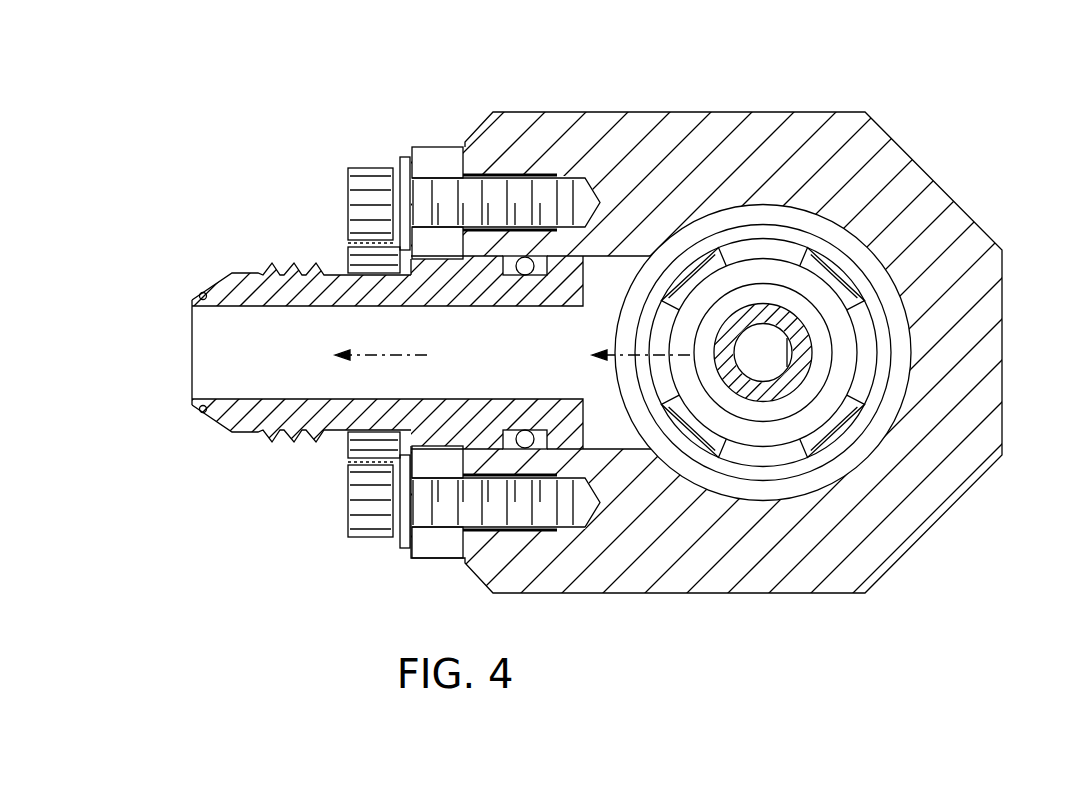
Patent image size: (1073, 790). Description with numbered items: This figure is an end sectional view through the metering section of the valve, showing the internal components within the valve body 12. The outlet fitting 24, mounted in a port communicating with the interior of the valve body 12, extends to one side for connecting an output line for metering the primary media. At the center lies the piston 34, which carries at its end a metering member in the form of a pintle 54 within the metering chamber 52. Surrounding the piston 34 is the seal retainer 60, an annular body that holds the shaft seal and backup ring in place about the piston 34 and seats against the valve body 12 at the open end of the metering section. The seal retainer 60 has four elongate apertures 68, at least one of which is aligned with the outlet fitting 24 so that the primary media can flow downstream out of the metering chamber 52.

The valve body 12 is at (890, 162).
The outlet fitting 24 is at (218, 413).
The piston 34 is at (775, 350).
The metering chamber 52 is at (815, 207).
The pintle 54 is at (763, 390).
The seal retainer 60 is at (873, 265).
The elongate apertures 68 is at (747, 248).